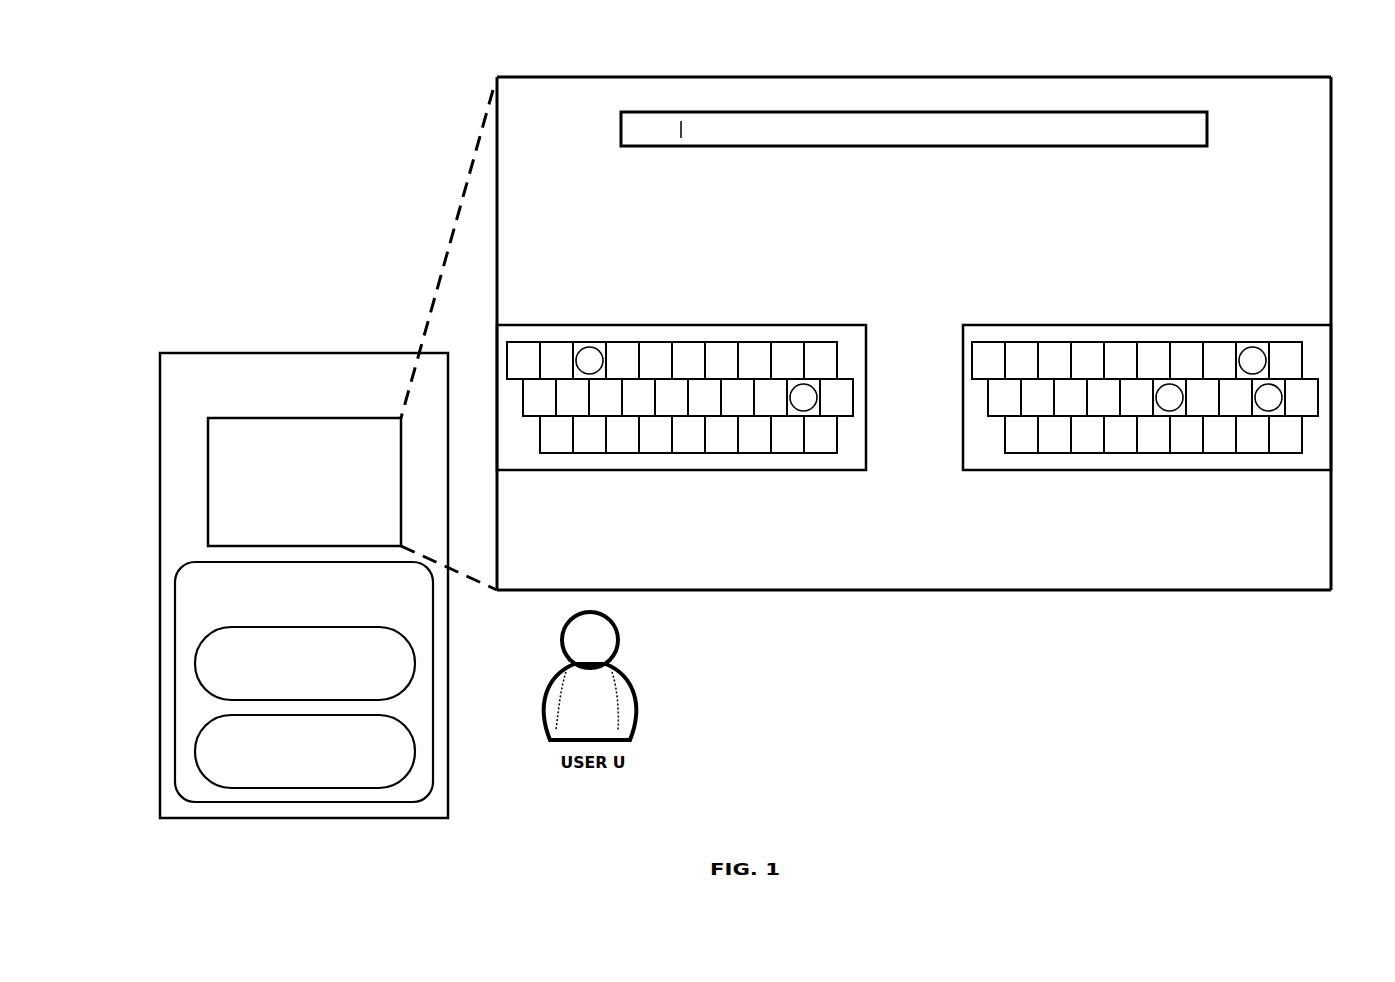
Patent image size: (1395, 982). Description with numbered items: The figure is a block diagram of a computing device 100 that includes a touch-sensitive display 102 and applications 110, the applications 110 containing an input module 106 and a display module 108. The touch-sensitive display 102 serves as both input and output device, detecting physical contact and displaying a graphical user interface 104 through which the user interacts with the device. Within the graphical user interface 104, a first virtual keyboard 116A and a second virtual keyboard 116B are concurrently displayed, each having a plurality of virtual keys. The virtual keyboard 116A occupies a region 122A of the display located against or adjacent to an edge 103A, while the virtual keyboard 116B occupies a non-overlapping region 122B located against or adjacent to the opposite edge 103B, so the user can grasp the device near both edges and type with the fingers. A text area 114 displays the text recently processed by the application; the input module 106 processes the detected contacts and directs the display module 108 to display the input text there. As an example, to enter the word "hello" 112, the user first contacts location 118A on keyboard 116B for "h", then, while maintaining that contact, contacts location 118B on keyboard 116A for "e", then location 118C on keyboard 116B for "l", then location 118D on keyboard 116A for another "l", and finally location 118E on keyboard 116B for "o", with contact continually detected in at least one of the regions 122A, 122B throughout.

The computing device 100 is at (289, 408).
The touch-sensitive display 102 is at (289, 516).
The graphical user interface 104 is at (530, 77).
The input module 106 is at (289, 685).
The display module 108 is at (289, 773).
The applications 110 is at (289, 618).
The word "hello" 112 is at (647, 138).
The text area 114 is at (1145, 112).
The edge of touch-sensitive display 103A is at (498, 250).
The edge of touch-sensitive display 103B is at (1331, 258).
The virtual keyboard 116A is at (668, 342).
The virtual keyboard 116B is at (1135, 342).
The location 118A is at (1167, 411).
The location 118B is at (586, 374).
The location 118C is at (1266, 411).
The location 118D is at (806, 411).
The location 118E is at (1256, 347).
The region 122A is at (845, 325).
The region 122B is at (980, 325).